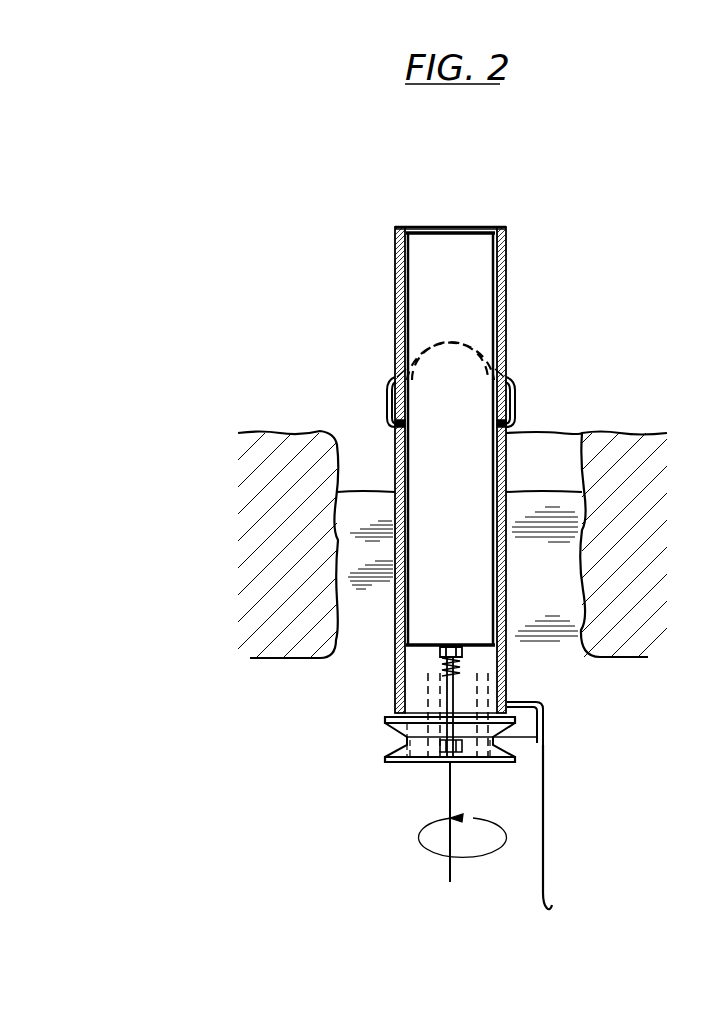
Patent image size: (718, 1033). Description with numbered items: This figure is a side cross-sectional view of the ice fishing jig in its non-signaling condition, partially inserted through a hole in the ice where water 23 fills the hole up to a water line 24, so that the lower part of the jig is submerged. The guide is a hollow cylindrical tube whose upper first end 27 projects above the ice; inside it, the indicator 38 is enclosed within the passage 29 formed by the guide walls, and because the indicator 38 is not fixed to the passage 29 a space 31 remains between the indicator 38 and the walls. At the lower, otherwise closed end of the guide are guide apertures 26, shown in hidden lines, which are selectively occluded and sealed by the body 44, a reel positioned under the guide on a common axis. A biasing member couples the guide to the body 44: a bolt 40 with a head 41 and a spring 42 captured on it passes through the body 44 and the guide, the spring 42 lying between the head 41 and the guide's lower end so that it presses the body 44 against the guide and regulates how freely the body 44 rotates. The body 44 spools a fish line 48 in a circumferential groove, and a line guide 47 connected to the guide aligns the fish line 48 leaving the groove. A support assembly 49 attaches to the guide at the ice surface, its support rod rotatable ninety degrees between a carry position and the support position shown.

The water 23 is at (360, 610).
The water line 24 is at (367, 488).
The guide apertures 26 is at (413, 699).
The first end 27 is at (507, 253).
The passage 29 is at (506, 552).
The space 31 is at (491, 228).
The indicator 38 is at (480, 323).
The bolt 40 is at (460, 658).
The head 41 is at (440, 651).
The spring 42 is at (437, 665).
The body 44 is at (393, 757).
The line guide 47 is at (543, 716).
The fish line 48 is at (545, 850).
The support assembly 49 is at (524, 393).